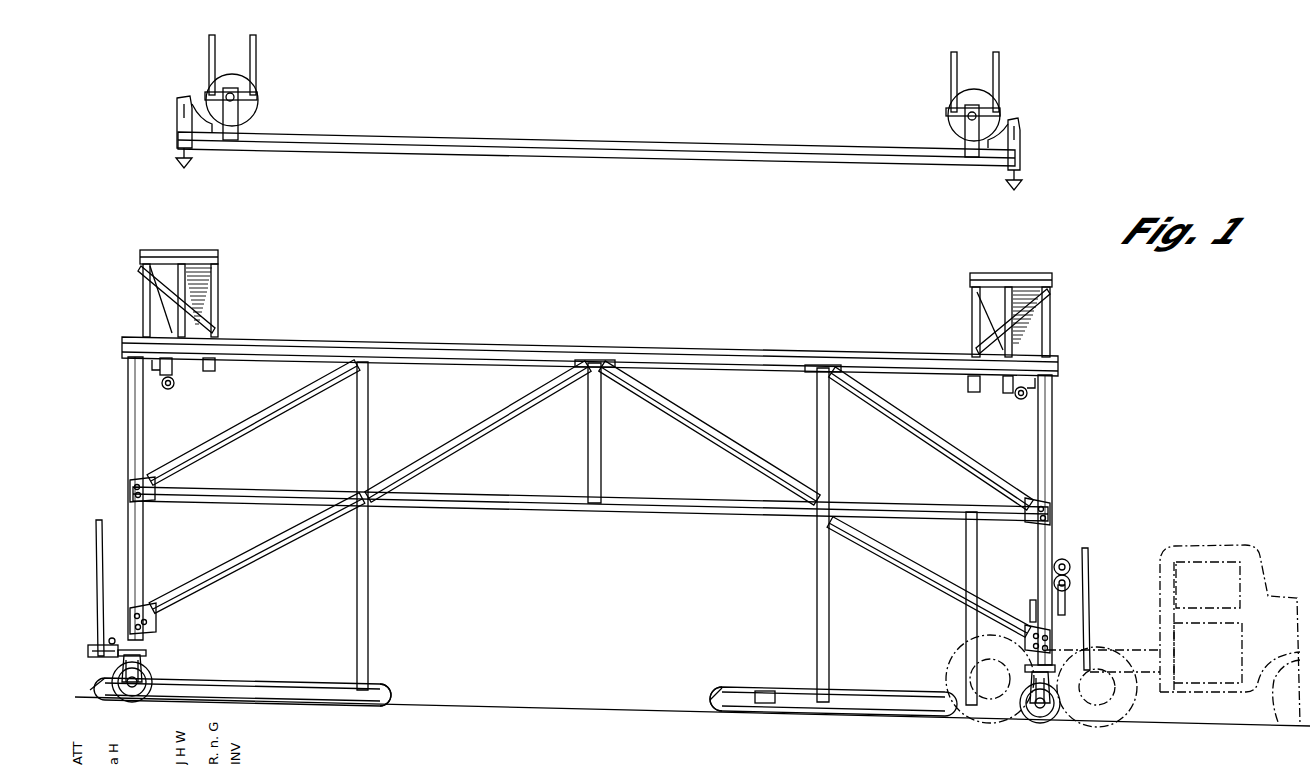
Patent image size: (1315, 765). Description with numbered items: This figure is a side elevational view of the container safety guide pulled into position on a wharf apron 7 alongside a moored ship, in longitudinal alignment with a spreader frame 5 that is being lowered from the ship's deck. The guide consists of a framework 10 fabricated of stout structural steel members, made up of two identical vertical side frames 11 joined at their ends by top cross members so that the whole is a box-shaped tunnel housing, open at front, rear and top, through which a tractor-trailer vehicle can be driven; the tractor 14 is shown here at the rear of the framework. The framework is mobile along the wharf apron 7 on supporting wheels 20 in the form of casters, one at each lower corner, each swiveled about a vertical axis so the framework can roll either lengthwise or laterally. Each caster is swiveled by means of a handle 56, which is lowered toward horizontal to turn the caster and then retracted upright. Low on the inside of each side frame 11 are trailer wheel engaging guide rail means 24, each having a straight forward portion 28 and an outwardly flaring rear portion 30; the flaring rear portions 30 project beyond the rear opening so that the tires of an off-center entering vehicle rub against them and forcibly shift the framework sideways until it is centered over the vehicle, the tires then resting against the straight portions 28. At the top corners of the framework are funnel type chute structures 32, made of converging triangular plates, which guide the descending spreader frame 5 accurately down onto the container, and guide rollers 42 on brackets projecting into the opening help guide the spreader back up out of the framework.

The spreader frame 5 is at (1022, 148).
The wharf apron 7 is at (584, 700).
The framework 10 is at (732, 338).
The vertical side frames 11 is at (598, 520).
The tractor 14 is at (1214, 545).
The supporting wheels 20 is at (148, 664).
The trailer wheel engaging guide rail means 24 is at (392, 684).
The straight forward portion 28 is at (284, 682).
The outwardly flaring rear portion 30 is at (98, 672).
The funnel type chute structures 32 is at (228, 260).
The guide rollers 42 is at (174, 386).
The handle 56 is at (100, 550).